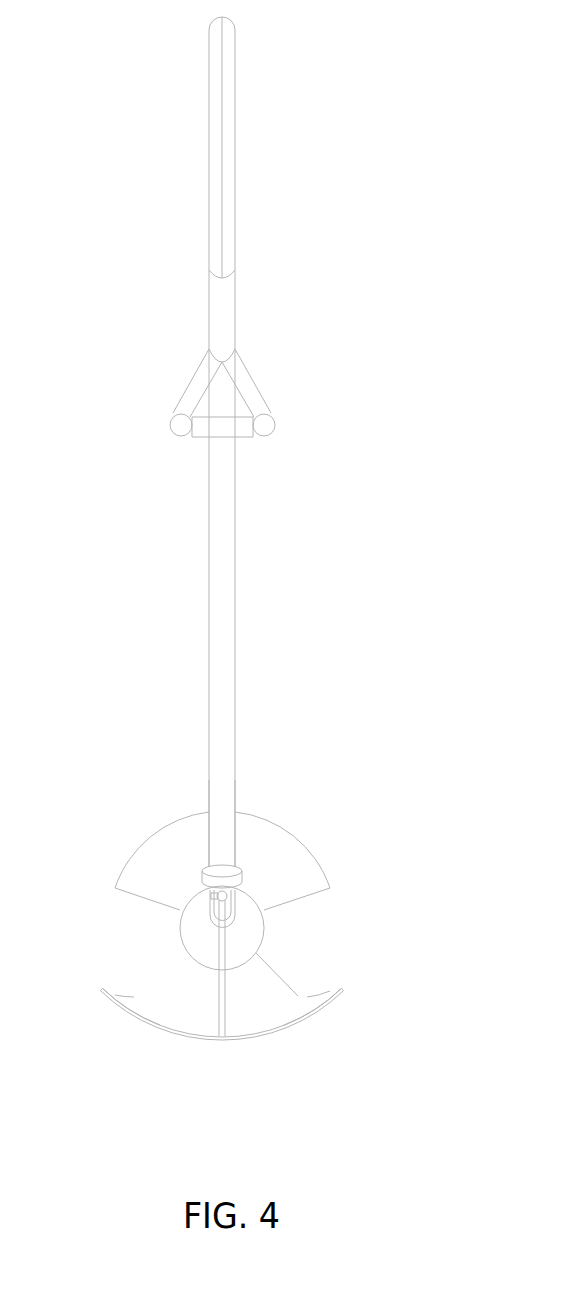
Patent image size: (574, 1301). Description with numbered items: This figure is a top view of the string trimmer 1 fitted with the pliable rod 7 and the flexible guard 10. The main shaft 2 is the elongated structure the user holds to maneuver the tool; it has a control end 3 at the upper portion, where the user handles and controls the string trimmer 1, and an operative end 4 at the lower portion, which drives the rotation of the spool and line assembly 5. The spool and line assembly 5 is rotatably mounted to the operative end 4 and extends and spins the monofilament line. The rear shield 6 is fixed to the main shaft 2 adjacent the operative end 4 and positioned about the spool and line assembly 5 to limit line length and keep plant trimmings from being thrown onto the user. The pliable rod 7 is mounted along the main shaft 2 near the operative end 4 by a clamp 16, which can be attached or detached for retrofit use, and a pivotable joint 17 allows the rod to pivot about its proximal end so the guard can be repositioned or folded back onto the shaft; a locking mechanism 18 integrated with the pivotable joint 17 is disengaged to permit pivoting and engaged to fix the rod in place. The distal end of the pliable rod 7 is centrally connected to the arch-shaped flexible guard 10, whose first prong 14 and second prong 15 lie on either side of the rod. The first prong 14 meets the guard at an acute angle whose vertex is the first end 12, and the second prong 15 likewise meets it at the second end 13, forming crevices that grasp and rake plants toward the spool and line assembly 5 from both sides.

The string trimmer 1 is at (230, 556).
The main shaft 2 is at (212, 535).
The control end 3 is at (236, 310).
The operative end 4 is at (208, 800).
The spool and line assembly 5 is at (256, 948).
The rear shield 6 is at (317, 872).
The pliable rod 7 is at (222, 1003).
The flexible guard 10 is at (201, 1037).
The first end 12 is at (120, 1005).
The second end 13 is at (327, 1004).
The first prong 14 is at (125, 997).
The second prong 15 is at (322, 997).
The clamp 16 is at (239, 872).
The pivotable joint 17 is at (227, 893).
The locking mechanism 18 is at (214, 896).